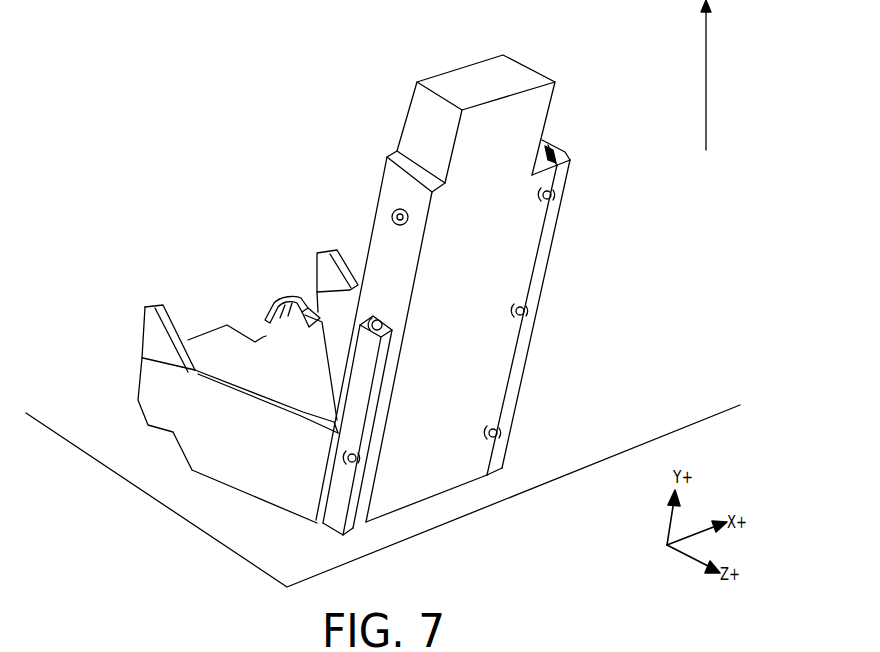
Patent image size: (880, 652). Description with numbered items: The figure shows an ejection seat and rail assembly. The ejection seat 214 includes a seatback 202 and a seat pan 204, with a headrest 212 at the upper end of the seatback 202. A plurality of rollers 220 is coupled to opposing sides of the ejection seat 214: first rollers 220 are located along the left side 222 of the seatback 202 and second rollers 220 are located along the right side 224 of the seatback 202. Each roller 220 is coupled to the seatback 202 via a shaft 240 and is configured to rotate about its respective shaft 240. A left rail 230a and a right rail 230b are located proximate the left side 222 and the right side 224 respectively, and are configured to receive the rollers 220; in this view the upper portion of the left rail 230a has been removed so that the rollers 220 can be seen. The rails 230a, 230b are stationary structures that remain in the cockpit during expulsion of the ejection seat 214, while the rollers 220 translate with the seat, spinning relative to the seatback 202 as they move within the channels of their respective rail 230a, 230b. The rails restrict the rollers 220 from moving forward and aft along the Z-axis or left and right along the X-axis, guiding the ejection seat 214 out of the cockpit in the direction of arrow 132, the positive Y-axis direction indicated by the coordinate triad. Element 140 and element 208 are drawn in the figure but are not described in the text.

The arrow 132 is at (707, 91).
The floor 140 is at (577, 426).
The seatback 202 is at (489, 278).
The seat pan 204 is at (316, 376).
The seat belt bracket 208 is at (295, 298).
The headrest 212 is at (523, 67).
The ejection seat 214 is at (607, 72).
The rollers 220 is at (395, 214).
The left side of seatback 222 is at (380, 257).
The right side of seatback 224 is at (544, 282).
The left rail 230a is at (360, 385).
The right rail 230b is at (563, 152).
The shaft 240 is at (410, 218).